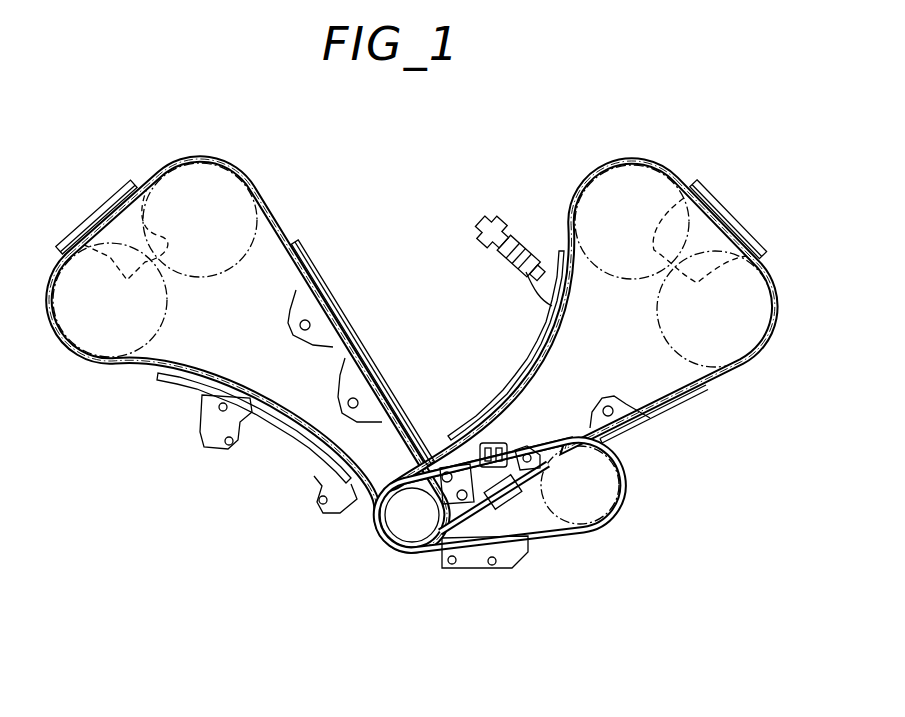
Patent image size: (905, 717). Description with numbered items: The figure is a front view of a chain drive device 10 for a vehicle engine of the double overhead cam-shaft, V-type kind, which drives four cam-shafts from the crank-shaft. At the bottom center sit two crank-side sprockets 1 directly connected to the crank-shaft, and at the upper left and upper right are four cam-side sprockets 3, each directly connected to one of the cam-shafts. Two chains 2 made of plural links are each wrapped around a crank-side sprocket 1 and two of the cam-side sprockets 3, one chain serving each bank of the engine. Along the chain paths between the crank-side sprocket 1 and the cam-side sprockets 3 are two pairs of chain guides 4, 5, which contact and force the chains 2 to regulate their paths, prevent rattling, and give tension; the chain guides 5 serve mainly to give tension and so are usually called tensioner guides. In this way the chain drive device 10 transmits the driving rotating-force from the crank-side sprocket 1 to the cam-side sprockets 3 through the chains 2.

The crank-side sprocket 1 is at (385, 536).
The chain 2 is at (148, 365).
The cam-side sprocket 3 is at (214, 183).
The chain guide 4 is at (102, 207).
The chain guide (tensioner guide) 5 is at (290, 425).
The chain drive device 10 is at (238, 528).